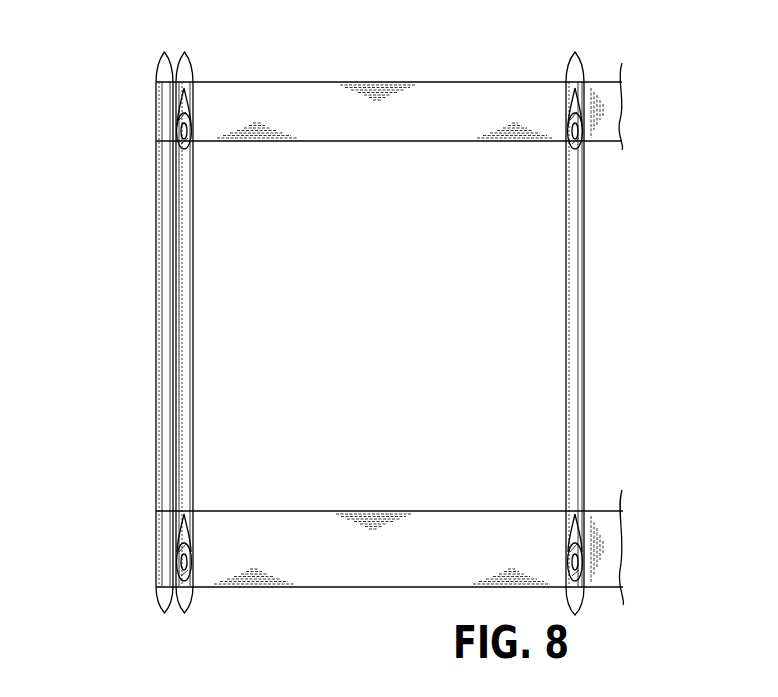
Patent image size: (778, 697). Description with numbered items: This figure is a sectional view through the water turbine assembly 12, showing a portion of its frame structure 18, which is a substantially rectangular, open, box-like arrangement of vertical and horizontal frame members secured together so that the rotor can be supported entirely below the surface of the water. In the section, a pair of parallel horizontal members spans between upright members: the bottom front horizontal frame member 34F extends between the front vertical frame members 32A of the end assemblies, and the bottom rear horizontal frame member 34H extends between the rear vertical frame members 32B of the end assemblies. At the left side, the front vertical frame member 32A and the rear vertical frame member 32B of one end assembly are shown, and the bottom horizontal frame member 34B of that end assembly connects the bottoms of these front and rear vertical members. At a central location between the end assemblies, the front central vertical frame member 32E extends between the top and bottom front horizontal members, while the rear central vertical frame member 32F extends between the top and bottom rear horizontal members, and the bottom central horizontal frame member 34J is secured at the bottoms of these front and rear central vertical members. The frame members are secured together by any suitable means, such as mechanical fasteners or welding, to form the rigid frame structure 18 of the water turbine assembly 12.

The water turbine assembly 12 is at (112, 70).
The frame structure 18 is at (451, 70).
The front vertical frame member 32A is at (190, 562).
The rear vertical frame member 32B is at (195, 131).
The front central vertical frame member 32E is at (582, 540).
The rear central vertical frame member 32F is at (588, 112).
The bottom horizontal frame member 34B is at (194, 291).
The bottom front horizontal frame member 34F is at (343, 588).
The bottom rear horizontal frame member 34H is at (312, 82).
The bottom central horizontal frame member 34J is at (585, 332).